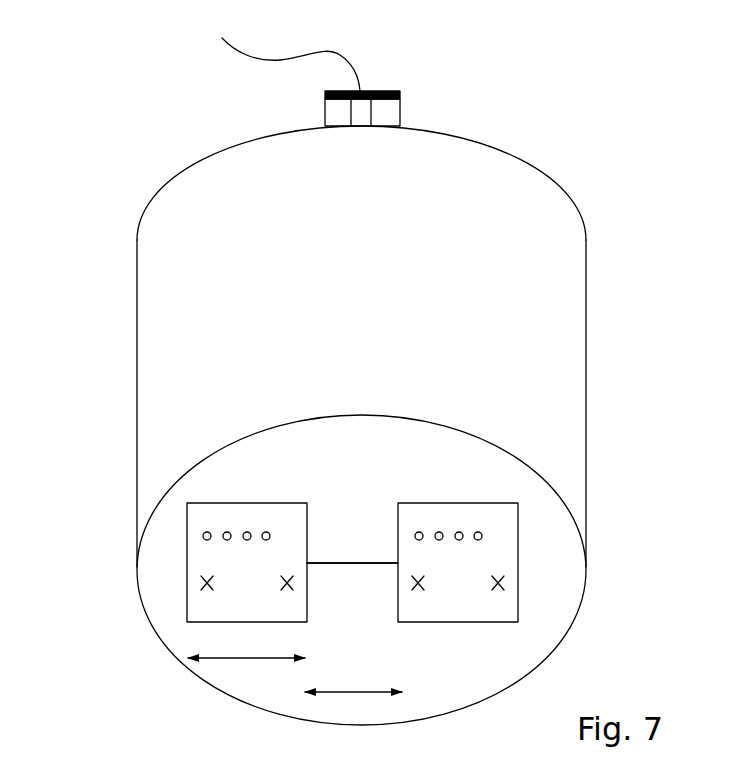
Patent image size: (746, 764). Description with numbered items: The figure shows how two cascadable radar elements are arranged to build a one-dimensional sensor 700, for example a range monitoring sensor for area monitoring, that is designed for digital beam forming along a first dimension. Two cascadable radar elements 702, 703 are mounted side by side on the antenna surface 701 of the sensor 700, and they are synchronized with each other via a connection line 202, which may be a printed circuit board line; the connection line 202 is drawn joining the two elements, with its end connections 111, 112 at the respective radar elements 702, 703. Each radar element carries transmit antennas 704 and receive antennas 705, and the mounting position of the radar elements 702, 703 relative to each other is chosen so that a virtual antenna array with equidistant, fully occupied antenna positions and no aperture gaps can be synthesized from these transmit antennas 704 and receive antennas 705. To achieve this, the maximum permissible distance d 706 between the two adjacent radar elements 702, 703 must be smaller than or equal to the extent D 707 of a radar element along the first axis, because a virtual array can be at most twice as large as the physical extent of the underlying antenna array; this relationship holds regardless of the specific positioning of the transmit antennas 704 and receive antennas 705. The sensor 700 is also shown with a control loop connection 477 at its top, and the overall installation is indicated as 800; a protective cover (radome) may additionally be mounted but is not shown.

The 4-20 mA control loop connection 477 is at (220, 63).
The one-dimensional sensor 700 is at (548, 67).
The antenna surface 701 is at (547, 632).
The cascadable radar element 702 is at (291, 503).
The cascadable radar element 703 is at (499, 503).
The receive antennas 705 is at (207, 531).
The connecting bar 112 is at (310, 562).
The connection line 202 is at (370, 563).
The bar connection to second module 111 is at (397, 565).
The transmit antennas 704 is at (494, 592).
The extent D of a radar element 707 is at (255, 688).
The maximum permissible distance d 706 is at (340, 702).
The installation 800 is at (458, 763).